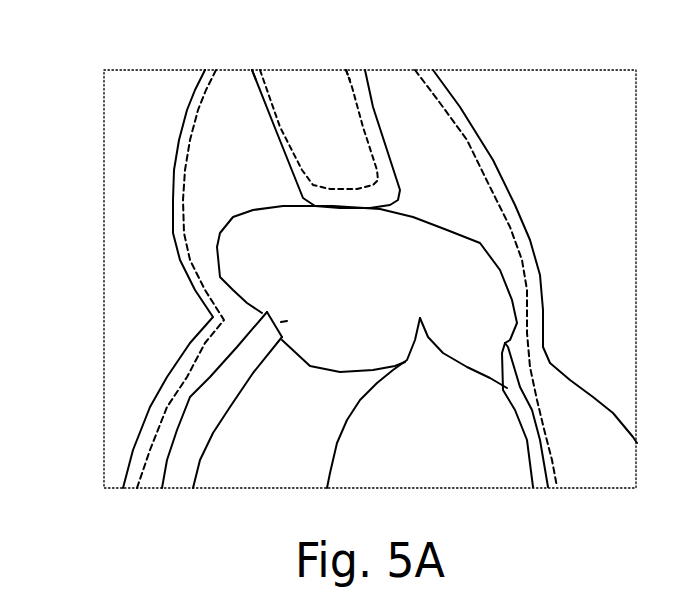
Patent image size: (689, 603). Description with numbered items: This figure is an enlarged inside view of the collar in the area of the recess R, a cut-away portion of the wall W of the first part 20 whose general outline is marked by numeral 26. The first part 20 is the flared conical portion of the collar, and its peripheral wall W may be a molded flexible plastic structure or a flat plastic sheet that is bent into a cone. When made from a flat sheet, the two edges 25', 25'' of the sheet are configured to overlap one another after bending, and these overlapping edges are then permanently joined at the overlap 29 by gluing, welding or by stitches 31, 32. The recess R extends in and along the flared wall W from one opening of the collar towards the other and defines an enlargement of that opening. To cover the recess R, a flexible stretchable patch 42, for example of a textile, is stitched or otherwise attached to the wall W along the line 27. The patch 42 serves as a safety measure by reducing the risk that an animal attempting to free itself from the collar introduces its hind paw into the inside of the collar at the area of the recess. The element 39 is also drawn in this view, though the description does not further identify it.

The first part 20 is at (620, 286).
The line 27 is at (187, 143).
The wall W is at (160, 265).
The side branch tube 39 is at (150, 407).
The edge 25' is at (282, 139).
The edge 25'' is at (411, 139).
The overlap 29 is at (345, 141).
The stitches 32 is at (251, 72).
The stitches 31 is at (348, 92).
The recess R is at (357, 268).
The patch 42 is at (437, 280).
The outline 26 is at (488, 247).